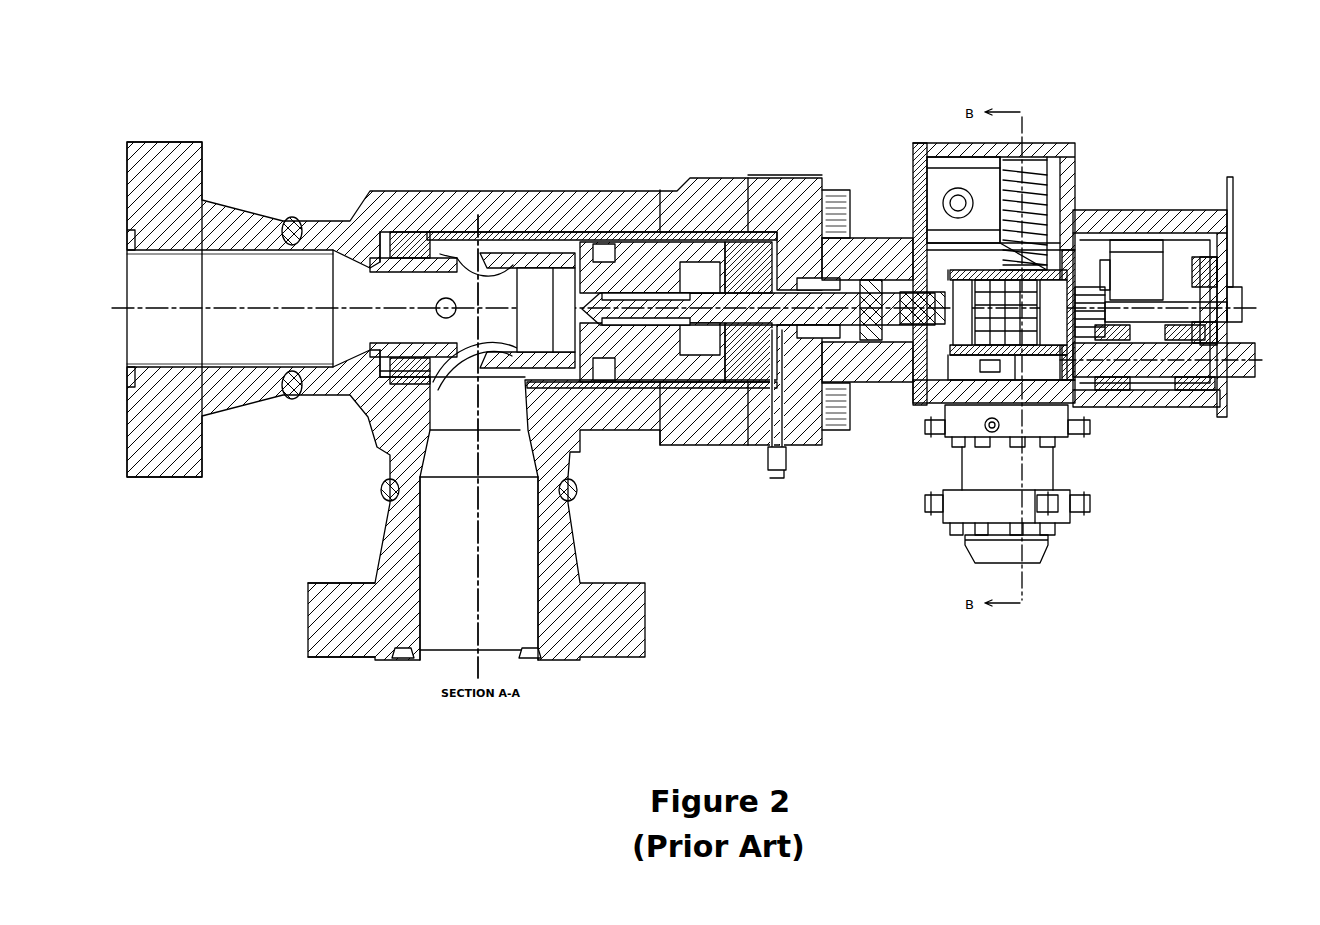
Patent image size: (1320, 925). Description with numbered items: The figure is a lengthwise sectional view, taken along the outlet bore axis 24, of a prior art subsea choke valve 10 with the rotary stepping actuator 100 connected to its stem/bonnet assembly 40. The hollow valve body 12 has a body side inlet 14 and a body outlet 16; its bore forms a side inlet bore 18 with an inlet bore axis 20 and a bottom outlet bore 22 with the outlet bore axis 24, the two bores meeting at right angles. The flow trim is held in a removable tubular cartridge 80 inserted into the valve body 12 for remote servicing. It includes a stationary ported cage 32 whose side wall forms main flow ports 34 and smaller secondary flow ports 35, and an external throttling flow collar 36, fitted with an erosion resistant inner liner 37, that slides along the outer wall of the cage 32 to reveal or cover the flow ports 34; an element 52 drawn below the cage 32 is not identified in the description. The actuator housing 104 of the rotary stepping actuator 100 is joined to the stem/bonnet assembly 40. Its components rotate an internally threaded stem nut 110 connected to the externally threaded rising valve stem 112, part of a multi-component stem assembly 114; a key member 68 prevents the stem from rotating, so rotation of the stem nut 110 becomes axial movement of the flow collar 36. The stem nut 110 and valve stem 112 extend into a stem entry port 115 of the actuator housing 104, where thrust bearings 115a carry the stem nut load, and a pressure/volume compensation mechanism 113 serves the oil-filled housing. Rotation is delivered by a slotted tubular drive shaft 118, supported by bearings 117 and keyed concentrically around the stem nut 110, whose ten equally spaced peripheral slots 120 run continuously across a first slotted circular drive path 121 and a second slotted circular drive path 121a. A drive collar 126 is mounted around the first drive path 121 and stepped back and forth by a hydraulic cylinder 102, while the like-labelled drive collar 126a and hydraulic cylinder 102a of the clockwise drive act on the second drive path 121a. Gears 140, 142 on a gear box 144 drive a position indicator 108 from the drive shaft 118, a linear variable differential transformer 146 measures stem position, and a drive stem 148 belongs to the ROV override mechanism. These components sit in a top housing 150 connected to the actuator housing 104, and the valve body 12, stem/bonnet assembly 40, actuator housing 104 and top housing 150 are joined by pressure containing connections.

The choke valve 10 is at (338, 181).
The hollow valve body 12 is at (375, 190).
The body side inlet 14 is at (528, 620).
The body outlet 16 is at (145, 366).
The side inlet bore 18 is at (422, 628).
The inlet bore axis 20 is at (482, 614).
The bottom outlet bore 22 is at (213, 367).
The outlet bore axis 24 is at (225, 306).
The cage 32 is at (440, 258).
The main flow ports 34 is at (490, 283).
The secondary flow ports 35 is at (438, 316).
The flow collar 36 is at (530, 250).
The inner liner 37 is at (546, 310).
The stem/bonnet assembly 40 is at (760, 176).
The valve chamber 52 is at (445, 380).
The key member 68 is at (868, 280).
The removable tubular cartridge 80 is at (490, 232).
The rotary stepping actuator 100 is at (1081, 92).
The hydraulic cylinder 102 is at (1045, 562).
The hydraulic cylinder of clockwise drive 102a is at (972, 562).
The actuator housing 104 is at (925, 143).
The position indicator 108 is at (1232, 248).
The stem nut 110 is at (915, 355).
The rising valve stem 112 is at (880, 382).
The pressure/volume compensation mechanism 113 is at (936, 180).
The multi-component stem assembly 114 is at (692, 432).
The stem entry port 115 is at (907, 253).
The thrust bearings 115a is at (913, 242).
The bearings 117 is at (908, 392).
The slotted tubular drive shaft 118 is at (935, 425).
The peripheral slots 120 is at (1038, 335).
The first slotted circular drive path 121 is at (1012, 165).
The second slotted circular drive path 121a is at (988, 160).
The drive collar 126 is at (1092, 212).
The drive collar of clockwise drive 126a is at (988, 217).
The gear 140 is at (1140, 238).
The gear 142 is at (1150, 286).
The gear box 144 is at (1230, 185).
The linear variable differential transformer 146 is at (1238, 310).
The drive stem 148 is at (1238, 368).
The top housing 150 is at (1150, 407).